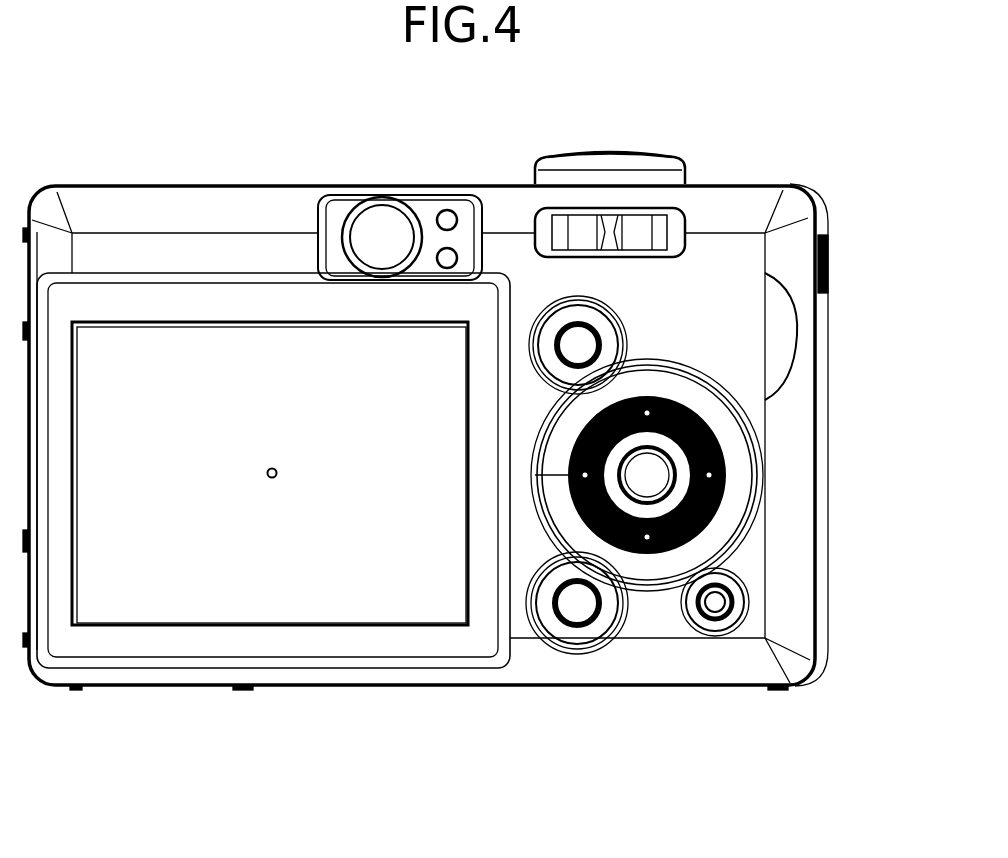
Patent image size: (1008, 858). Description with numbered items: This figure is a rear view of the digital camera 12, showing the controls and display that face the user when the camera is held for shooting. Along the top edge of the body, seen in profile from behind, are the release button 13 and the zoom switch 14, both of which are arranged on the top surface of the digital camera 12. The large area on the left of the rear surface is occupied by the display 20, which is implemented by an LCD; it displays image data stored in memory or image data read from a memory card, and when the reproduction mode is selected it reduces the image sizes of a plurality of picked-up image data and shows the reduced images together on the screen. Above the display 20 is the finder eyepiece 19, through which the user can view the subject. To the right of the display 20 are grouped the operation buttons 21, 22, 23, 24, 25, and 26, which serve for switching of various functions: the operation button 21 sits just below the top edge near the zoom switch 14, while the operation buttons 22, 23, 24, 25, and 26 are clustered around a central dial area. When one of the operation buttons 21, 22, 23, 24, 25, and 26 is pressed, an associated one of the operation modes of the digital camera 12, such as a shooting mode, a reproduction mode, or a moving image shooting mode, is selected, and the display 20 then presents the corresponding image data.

The digital camera 12 is at (150, 212).
The release button 13 is at (596, 158).
The zoom switch 14 is at (623, 181).
The finder eyepiece 19 is at (390, 237).
The display 20 is at (290, 605).
The operation button 21 is at (640, 228).
The operation button 22 is at (565, 340).
The operation button 23 is at (657, 468).
The operation button 24 is at (577, 605).
The operation button 25 is at (713, 603).
The operation button 26 is at (712, 512).